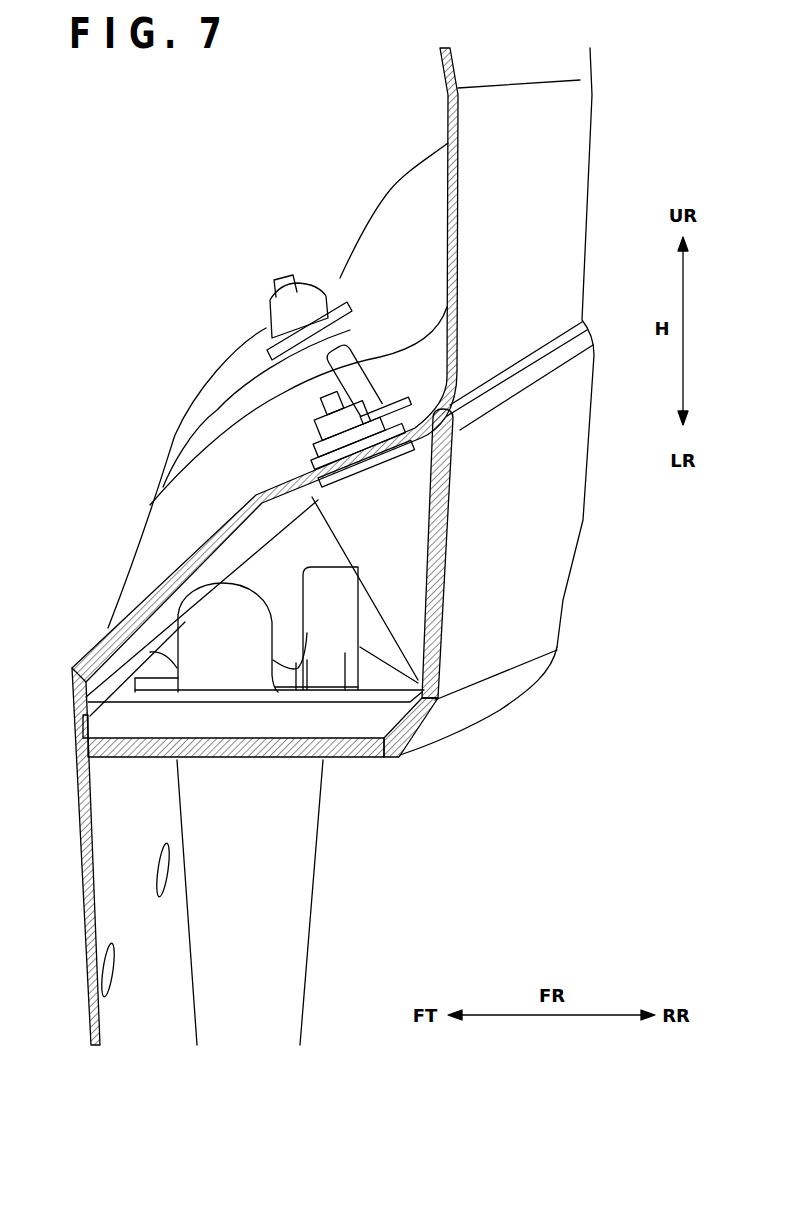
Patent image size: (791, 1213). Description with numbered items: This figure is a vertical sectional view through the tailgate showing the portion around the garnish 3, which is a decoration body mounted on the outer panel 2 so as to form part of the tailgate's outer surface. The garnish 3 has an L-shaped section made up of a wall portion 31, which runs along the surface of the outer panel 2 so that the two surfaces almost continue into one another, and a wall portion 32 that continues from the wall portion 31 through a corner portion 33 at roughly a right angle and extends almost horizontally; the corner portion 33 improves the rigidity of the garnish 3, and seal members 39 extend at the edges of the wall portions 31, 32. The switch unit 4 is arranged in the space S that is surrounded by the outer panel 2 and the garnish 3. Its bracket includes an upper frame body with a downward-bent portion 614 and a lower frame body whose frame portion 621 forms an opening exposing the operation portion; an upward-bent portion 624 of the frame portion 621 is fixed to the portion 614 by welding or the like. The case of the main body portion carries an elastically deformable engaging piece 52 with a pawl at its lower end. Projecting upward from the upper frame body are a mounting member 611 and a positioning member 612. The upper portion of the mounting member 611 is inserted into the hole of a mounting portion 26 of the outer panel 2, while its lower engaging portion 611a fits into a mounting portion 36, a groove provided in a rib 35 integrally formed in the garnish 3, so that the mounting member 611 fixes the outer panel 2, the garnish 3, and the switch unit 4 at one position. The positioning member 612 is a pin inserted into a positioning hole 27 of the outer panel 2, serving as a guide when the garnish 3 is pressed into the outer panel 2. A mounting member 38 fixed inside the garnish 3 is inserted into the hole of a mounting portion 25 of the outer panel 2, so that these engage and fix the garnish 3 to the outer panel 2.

The outer panel 2 is at (193, 530).
The garnish 3 is at (503, 760).
The switch unit 4 is at (350, 724).
The mounting portion 25 is at (338, 290).
The mounting portion 26 is at (401, 418).
The positioning hole 27 is at (388, 382).
The wall portion 31 is at (550, 545).
The wall portion 32 is at (262, 758).
The corner portion 33 is at (427, 733).
The rib 35 is at (442, 510).
The mounting portion 36 is at (317, 497).
The mounting member 38 is at (273, 297).
The seal member 39 is at (80, 712).
The engaging piece 52 is at (347, 603).
The mounting member 611 is at (316, 410).
The engaging portion 611a is at (340, 490).
The positioning member 612 is at (323, 352).
The portion bent downward 614 is at (240, 583).
The frame portion 621 is at (313, 694).
The portion bent upward 624 is at (192, 633).
The space S is at (178, 700).